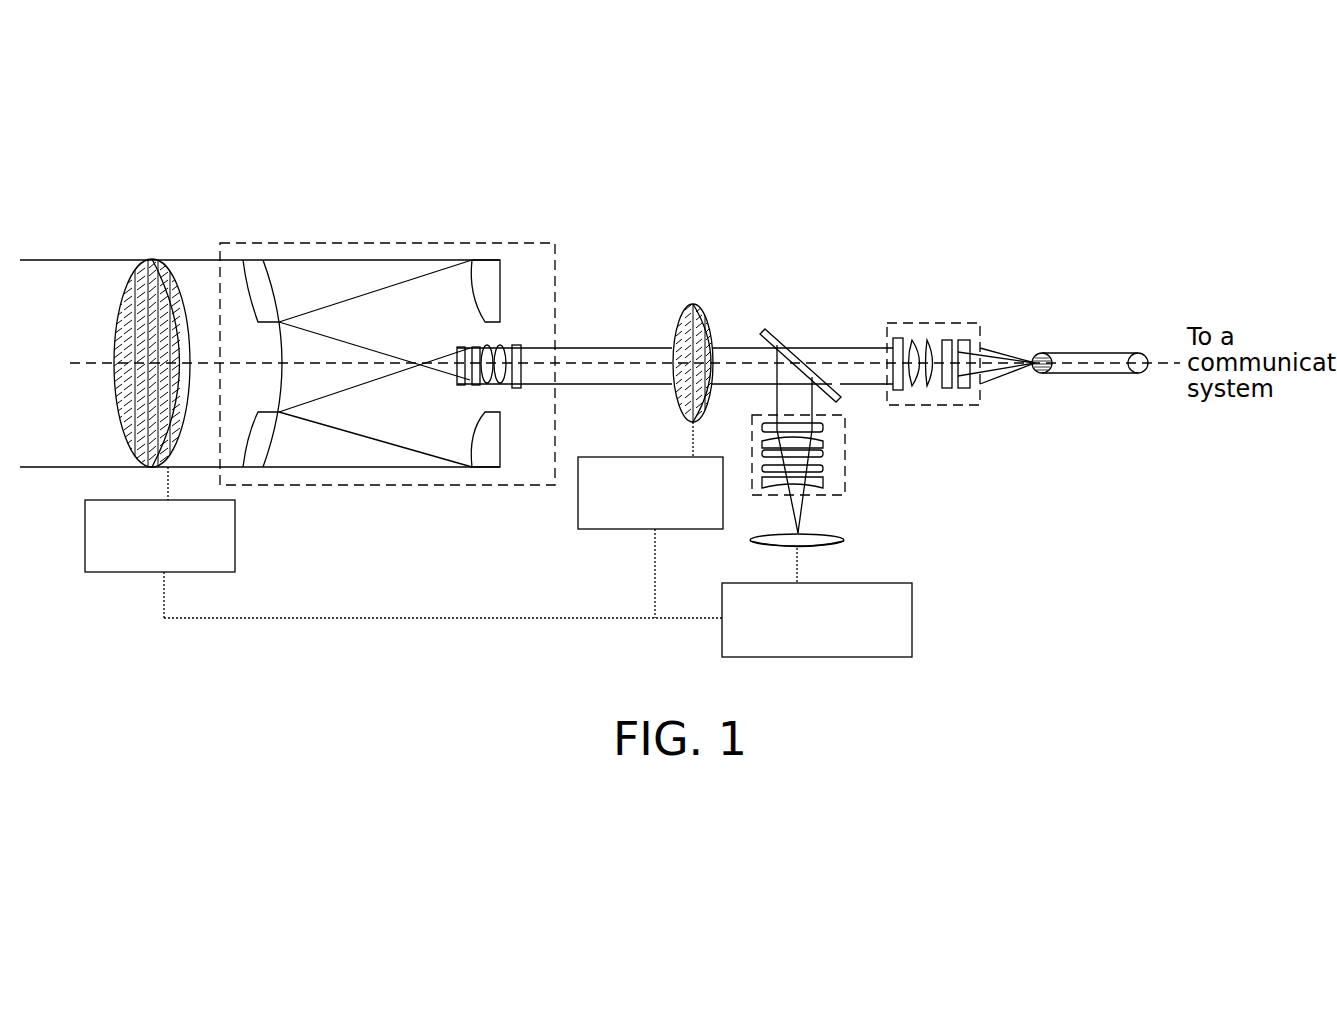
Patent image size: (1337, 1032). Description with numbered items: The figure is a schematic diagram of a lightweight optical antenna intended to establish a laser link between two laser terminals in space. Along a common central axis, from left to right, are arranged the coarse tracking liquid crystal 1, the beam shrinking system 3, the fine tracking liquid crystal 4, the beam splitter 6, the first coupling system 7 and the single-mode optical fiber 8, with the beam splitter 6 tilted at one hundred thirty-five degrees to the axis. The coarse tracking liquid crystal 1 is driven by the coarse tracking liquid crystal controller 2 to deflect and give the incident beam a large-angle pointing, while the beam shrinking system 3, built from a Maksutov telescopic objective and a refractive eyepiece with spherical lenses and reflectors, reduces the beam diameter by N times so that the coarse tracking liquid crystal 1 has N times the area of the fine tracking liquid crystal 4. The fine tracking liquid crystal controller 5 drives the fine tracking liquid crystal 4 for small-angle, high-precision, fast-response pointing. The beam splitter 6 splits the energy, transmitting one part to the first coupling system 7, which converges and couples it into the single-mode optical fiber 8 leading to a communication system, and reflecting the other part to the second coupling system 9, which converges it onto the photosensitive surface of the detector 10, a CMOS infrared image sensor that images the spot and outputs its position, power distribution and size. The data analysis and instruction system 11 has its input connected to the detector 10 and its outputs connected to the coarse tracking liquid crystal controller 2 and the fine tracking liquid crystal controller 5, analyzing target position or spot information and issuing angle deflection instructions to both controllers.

The coarse tracking liquid crystal 1 is at (167, 260).
The coarse tracking liquid crystal controller 2 is at (403, 542).
The beam shrinking system 3 is at (387, 243).
The fine tracking liquid crystal 4 is at (693, 305).
The fine tracking liquid crystal controller 5 is at (650, 520).
The beam splitter 6 is at (788, 347).
The first coupling system 7 is at (935, 323).
The single-mode optical fiber 8 is at (1050, 335).
The second coupling system 9 is at (843, 465).
The detector 10 is at (845, 543).
The data analysis and instruction system 11 is at (817, 620).